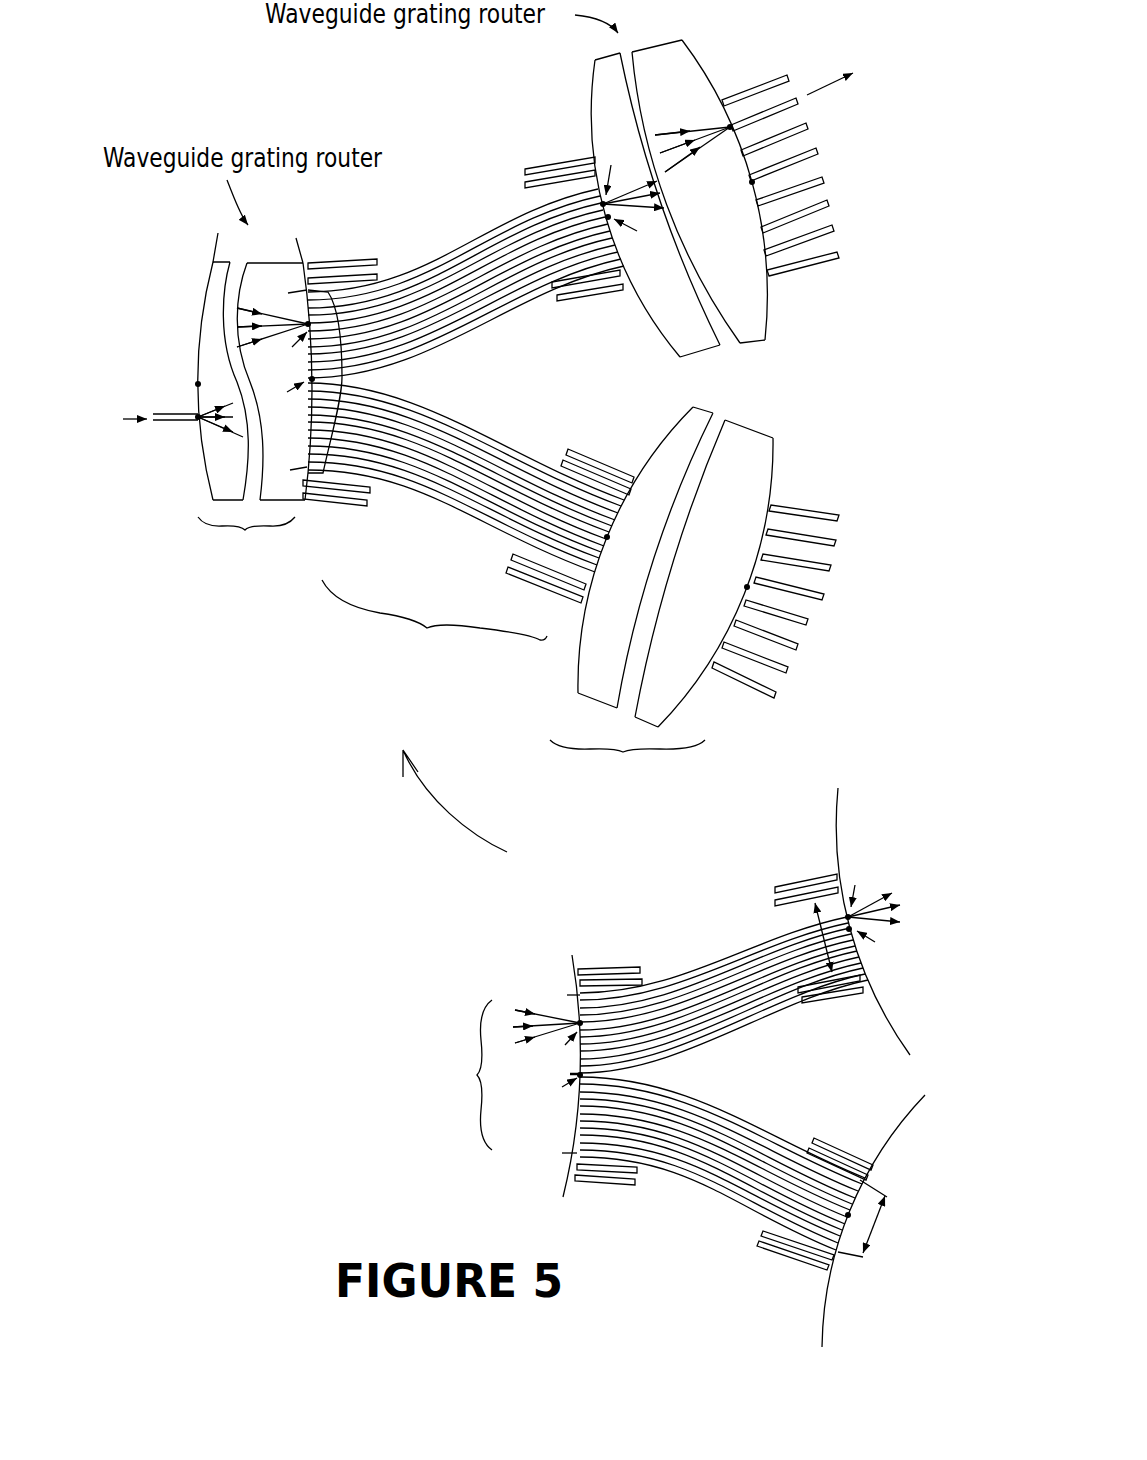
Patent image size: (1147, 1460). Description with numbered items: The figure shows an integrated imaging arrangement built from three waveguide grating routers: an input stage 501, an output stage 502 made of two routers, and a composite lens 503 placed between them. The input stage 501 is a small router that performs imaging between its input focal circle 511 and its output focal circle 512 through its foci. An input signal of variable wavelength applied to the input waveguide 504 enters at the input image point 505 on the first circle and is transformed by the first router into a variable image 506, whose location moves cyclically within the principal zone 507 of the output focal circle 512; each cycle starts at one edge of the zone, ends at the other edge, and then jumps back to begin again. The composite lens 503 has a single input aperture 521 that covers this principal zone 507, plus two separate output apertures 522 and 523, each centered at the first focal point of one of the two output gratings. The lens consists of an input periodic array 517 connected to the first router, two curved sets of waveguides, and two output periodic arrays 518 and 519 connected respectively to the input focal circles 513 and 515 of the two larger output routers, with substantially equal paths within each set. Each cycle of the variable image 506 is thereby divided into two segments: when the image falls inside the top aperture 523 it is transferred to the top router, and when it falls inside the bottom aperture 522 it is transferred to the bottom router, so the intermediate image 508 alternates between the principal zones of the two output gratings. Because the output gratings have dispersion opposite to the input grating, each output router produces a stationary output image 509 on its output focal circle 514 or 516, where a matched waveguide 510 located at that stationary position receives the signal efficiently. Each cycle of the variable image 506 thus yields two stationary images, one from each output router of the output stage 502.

The input stage 501 is at (246, 554).
The output stage 502 is at (627, 768).
The composite lens 503 is at (426, 637).
The input waveguide 504 is at (149, 389).
The input image point B0 505 is at (194, 434).
The variable image 506 is at (276, 385).
The principal zone 507 is at (342, 380).
The image B2 508 is at (632, 184).
The output image B3 509 is at (705, 148).
The matched waveguide 510 is at (805, 106).
The input focal circle of first router 511 is at (208, 248).
The output focal circle of first router 512 is at (308, 247).
The input focal circle of top output router 513 is at (583, 107).
The output focal circle of top output router 514 is at (716, 72).
The input focal circle of bottom output router 515 is at (656, 433).
The output focal circle of bottom output router 516 is at (787, 460).
The input periodic array 517 is at (358, 252).
The output periodic array 518 is at (547, 160).
The output periodic array 519 is at (607, 455).
The input aperture 521 is at (626, 1083).
The output aperture L1 522 is at (877, 1225).
The output aperture L2 523 is at (800, 942).